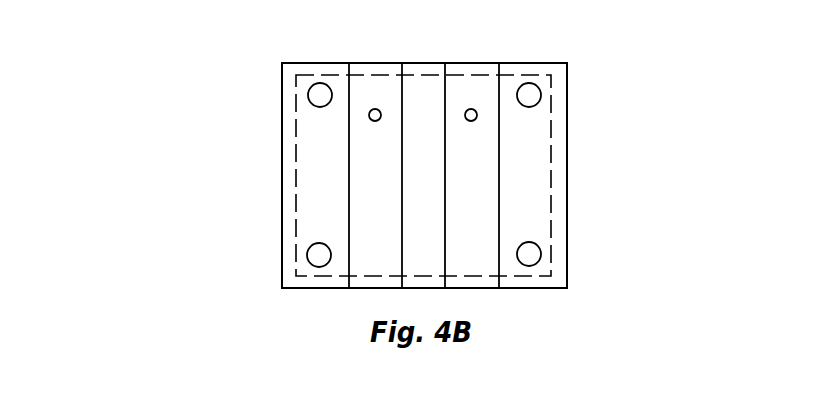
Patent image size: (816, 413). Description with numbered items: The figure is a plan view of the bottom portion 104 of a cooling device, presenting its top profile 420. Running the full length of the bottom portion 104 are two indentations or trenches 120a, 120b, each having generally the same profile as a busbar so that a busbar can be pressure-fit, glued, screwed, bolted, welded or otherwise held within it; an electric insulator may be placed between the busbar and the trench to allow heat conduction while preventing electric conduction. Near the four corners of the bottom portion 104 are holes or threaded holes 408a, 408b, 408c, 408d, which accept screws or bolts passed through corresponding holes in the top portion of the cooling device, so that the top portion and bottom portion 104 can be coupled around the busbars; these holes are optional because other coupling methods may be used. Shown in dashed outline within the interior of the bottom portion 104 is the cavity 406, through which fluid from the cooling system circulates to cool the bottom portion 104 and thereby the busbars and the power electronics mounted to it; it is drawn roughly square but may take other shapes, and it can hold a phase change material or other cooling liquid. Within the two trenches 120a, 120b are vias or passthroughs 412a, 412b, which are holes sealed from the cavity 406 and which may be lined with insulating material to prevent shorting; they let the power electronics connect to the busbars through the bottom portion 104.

The bottom portion 104 is at (155, 160).
The cavity 406 is at (553, 148).
The top profile 420 is at (533, 182).
The trench 120a is at (385, 95).
The trench 120b is at (483, 97).
The hole 408a is at (306, 262).
The hole 408b is at (541, 261).
The hole 408c is at (312, 91).
The hole 408d is at (555, 94).
The via 412a is at (374, 122).
The via 412b is at (471, 122).